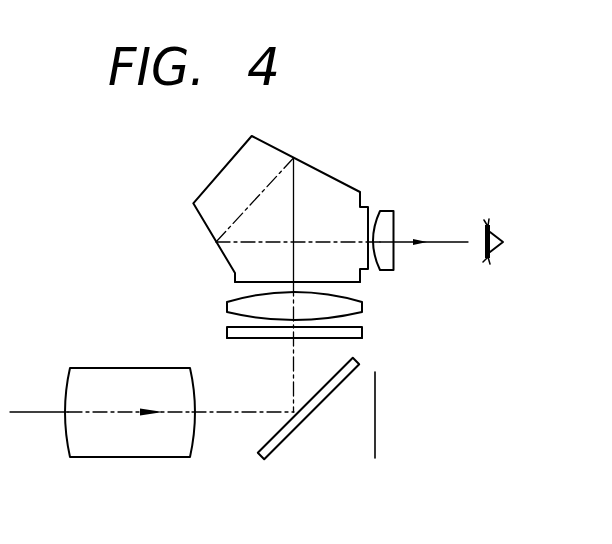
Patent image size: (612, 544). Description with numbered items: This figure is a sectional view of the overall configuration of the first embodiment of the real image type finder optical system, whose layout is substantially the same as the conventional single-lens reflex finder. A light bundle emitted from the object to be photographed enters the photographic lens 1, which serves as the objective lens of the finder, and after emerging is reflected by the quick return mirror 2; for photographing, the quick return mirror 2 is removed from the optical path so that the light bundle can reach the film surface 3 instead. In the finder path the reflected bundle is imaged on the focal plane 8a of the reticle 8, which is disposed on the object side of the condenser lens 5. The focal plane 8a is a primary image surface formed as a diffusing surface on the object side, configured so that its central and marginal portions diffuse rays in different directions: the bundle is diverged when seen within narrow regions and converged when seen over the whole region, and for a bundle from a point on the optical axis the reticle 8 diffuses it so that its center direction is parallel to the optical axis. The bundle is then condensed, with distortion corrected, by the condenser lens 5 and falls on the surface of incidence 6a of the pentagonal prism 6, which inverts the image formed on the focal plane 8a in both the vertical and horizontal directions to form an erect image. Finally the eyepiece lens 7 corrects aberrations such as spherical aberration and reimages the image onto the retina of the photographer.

The photographic lens 1 is at (157, 457).
The quick return mirror 2 is at (358, 358).
The film surface 3 is at (375, 457).
The condenser lens 5 is at (228, 302).
The pentagonal prism 6 is at (331, 175).
The surface of incidence 6a is at (360, 283).
The eyepiece lens 7 is at (382, 211).
The reticle 8 is at (227, 332).
The focal plane 8a is at (257, 338).